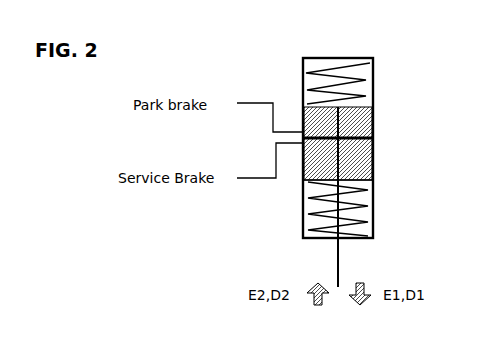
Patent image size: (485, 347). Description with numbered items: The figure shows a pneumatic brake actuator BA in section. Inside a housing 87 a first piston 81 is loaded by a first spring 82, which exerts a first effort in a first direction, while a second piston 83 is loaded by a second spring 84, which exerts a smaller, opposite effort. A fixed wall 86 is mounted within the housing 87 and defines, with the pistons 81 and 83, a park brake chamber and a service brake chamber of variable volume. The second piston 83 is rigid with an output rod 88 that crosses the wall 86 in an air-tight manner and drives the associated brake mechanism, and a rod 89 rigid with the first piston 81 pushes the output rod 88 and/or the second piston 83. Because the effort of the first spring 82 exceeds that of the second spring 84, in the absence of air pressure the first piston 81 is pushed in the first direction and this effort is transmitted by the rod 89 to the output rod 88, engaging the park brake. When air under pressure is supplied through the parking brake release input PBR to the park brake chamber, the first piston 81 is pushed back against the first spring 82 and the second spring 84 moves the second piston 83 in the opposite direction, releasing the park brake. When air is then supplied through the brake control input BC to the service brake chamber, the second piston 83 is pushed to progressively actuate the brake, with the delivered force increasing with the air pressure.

The first piston 81 is at (374, 103).
The first spring 82 is at (335, 75).
The second piston 83 is at (374, 174).
The second spring 84 is at (355, 209).
The fixed wall 86 is at (374, 136).
The housing 87 is at (303, 222).
The output rod 88 is at (340, 265).
The rod 89 is at (303, 112).
The brake actuator BA is at (298, 54).
The brake control input BC is at (259, 202).
The parking brake release input PBR is at (232, 85).